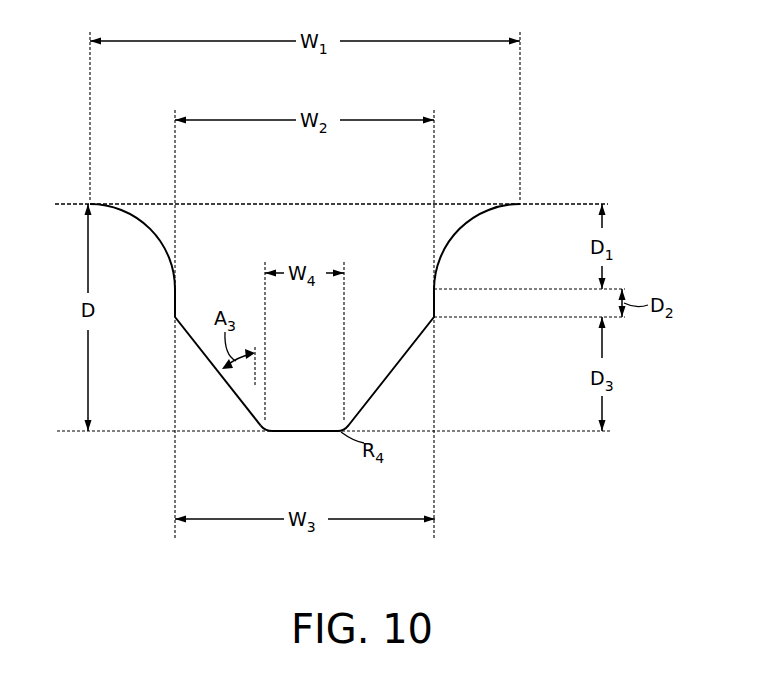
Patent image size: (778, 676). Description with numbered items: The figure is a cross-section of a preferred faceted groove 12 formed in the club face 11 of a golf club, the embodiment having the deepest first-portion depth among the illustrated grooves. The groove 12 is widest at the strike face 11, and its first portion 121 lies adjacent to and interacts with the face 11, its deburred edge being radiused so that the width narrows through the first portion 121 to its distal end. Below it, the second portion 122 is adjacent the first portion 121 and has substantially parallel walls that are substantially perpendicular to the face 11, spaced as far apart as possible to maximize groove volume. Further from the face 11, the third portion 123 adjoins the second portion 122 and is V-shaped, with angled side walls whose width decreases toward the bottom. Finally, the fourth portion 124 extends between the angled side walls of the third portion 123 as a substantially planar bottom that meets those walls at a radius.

The club face 11 is at (87, 203).
The faceted groove 12 is at (560, 119).
The first portion 121 is at (146, 229).
The second portion 122 is at (433, 297).
The third portion 123 is at (226, 378).
The fourth portion 124 is at (275, 433).